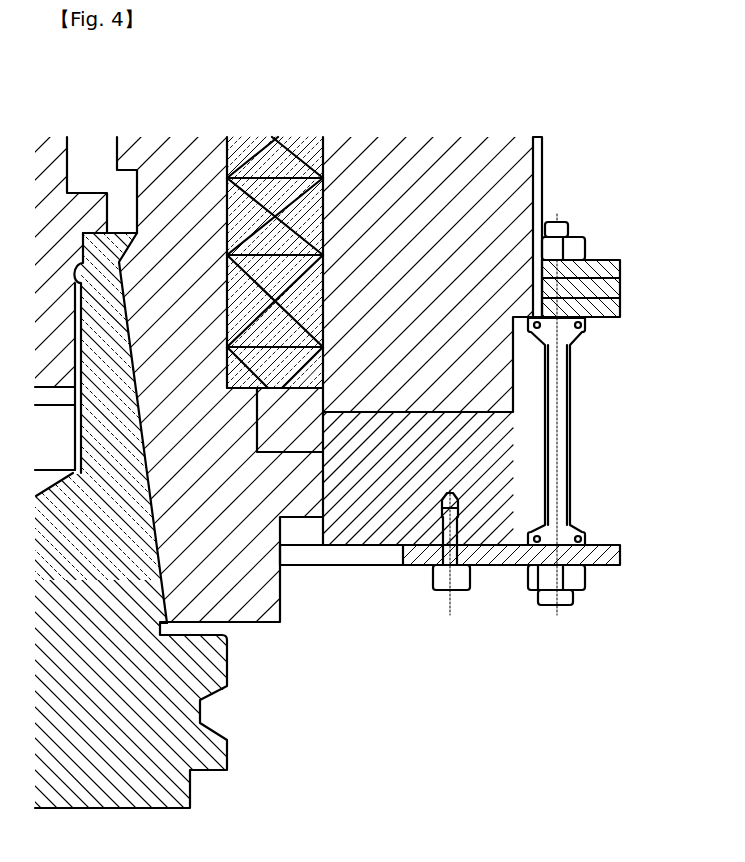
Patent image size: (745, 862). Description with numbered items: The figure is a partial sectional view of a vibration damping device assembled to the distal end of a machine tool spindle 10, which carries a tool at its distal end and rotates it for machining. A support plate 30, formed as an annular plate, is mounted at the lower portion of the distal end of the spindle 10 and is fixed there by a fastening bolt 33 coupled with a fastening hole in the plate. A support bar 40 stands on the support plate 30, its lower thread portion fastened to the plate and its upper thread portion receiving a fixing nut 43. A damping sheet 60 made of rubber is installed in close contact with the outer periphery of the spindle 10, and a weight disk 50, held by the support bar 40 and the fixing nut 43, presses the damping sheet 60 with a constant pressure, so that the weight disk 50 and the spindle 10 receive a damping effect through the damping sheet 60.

The machine tool spindle 10 is at (272, 692).
The support plate 30 is at (605, 557).
The fastening bolt 33 is at (443, 580).
The support bar 40 is at (572, 453).
The fixing nut 43 is at (575, 252).
The weight disk 50 is at (620, 285).
The damping sheet 60 is at (540, 178).